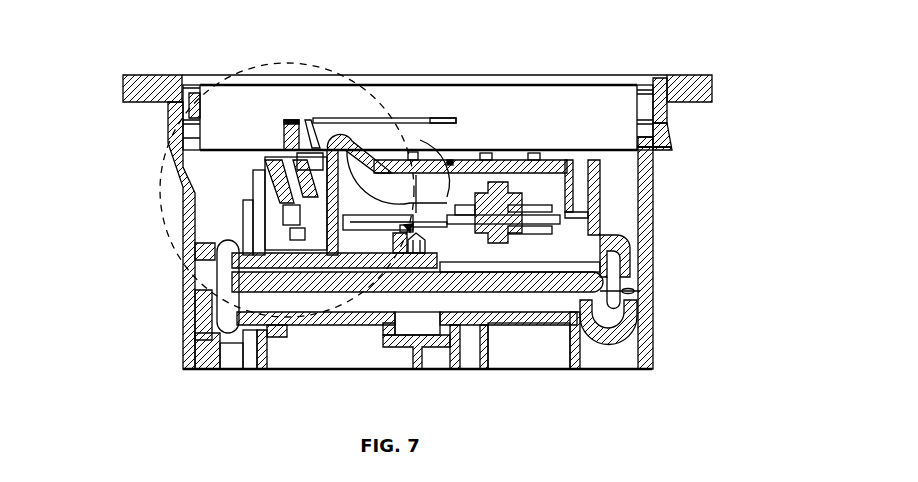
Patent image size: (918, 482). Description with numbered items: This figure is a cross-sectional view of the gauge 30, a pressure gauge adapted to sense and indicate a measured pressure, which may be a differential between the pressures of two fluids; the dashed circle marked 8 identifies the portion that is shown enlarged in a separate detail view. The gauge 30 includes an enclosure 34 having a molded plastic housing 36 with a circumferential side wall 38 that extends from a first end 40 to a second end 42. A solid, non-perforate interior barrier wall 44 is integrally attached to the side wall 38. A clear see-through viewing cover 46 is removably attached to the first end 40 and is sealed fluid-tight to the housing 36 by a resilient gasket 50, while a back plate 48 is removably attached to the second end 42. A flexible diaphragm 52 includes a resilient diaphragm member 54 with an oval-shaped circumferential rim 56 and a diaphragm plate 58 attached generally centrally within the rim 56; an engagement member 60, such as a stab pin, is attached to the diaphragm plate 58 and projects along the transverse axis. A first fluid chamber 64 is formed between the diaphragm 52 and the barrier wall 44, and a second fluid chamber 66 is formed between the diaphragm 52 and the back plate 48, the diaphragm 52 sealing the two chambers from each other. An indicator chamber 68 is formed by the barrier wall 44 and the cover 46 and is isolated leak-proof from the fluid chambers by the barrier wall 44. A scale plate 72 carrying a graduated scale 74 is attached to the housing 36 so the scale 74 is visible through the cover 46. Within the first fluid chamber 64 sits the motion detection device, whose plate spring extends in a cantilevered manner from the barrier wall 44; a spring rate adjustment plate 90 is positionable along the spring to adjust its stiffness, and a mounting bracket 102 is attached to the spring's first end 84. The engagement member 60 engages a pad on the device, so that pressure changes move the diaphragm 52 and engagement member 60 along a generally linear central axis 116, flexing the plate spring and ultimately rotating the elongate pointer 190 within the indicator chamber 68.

The gauge 30 is at (153, 45).
The section detail circle 8 is at (163, 188).
The enclosure 34 is at (720, 170).
The housing 36 is at (660, 205).
The circumferential side wall 38 is at (652, 218).
The first end 40 is at (667, 137).
The second end 42 is at (643, 282).
The interior barrier wall 44 is at (407, 118).
The viewing cover 46 is at (585, 75).
The back plate 48 is at (655, 345).
The resilient gasket 50 is at (660, 140).
The flexible diaphragm 52 is at (557, 299).
The diaphragm member 54 is at (522, 315).
The circumferential rim 56 is at (643, 295).
The diaphragm plate 58 is at (453, 323).
The engagement member 60 is at (425, 240).
The first fluid chamber 64 is at (368, 258).
The second fluid chamber 66 is at (265, 303).
The indicator chamber 68 is at (210, 187).
The scale plate 72 is at (614, 158).
The graduated scale 74 is at (568, 140).
The first end 84 is at (533, 232).
The spring rate adjustment plate 90 is at (533, 207).
The mounting bracket 102 is at (343, 148).
The central axis 116 is at (425, 197).
The pointer 190 is at (431, 118).